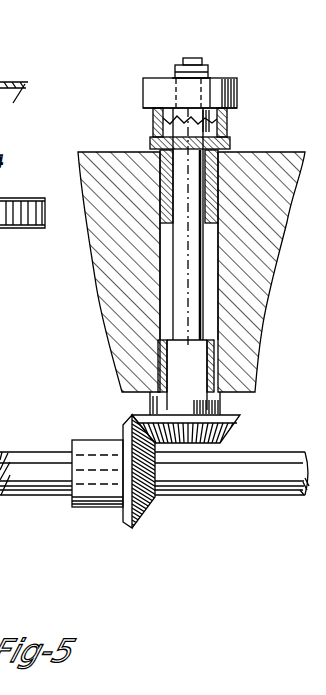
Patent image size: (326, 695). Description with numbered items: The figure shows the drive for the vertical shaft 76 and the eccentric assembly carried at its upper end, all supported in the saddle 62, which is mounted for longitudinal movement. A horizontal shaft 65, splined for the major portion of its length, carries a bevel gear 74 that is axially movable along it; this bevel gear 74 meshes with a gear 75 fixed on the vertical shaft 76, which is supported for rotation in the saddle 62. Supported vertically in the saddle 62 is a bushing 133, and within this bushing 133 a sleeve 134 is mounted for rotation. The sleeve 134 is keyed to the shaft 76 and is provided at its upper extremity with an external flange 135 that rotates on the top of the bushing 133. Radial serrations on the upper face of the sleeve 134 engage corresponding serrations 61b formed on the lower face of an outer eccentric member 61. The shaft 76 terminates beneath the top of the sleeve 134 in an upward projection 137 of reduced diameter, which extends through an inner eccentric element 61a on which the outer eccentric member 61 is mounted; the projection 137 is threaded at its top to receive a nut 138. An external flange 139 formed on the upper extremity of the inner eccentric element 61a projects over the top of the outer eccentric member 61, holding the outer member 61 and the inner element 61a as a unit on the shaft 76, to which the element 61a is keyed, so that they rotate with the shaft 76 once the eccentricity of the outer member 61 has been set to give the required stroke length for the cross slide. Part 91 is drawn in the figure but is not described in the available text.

The outer eccentric member 61 is at (237, 93).
The inner eccentric element 61a is at (176, 100).
The serrations 61b is at (237, 104).
The saddle 62 is at (283, 232).
The shaft 65 is at (30, 448).
The bevel gear 74 is at (140, 514).
The gear 75 is at (237, 422).
The vertical shaft 76 is at (203, 282).
The sleeve 91 is at (229, 123).
The bushing 133 is at (217, 175).
The sleeve 134 is at (146, 151).
The external flange 135 is at (150, 140).
The upward projection 137 is at (222, 92).
The nut 138 is at (207, 64).
The external flange 139 is at (200, 96).